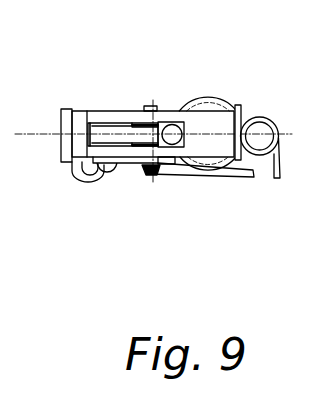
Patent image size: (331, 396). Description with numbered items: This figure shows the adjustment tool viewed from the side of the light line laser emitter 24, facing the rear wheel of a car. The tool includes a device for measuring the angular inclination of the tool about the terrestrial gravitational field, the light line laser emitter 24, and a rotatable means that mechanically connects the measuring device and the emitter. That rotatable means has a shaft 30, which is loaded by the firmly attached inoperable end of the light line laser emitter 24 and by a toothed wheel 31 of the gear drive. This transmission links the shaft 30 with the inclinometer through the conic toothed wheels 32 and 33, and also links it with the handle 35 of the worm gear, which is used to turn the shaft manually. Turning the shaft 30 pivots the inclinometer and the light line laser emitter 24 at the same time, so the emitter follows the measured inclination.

The light line laser emitter 24 is at (121, 128).
The shaft 30 is at (148, 108).
The toothed wheel 31 is at (148, 173).
The conic toothed wheel 32 is at (180, 171).
The conic toothed wheel 33 is at (212, 163).
The handle 35 is at (128, 163).